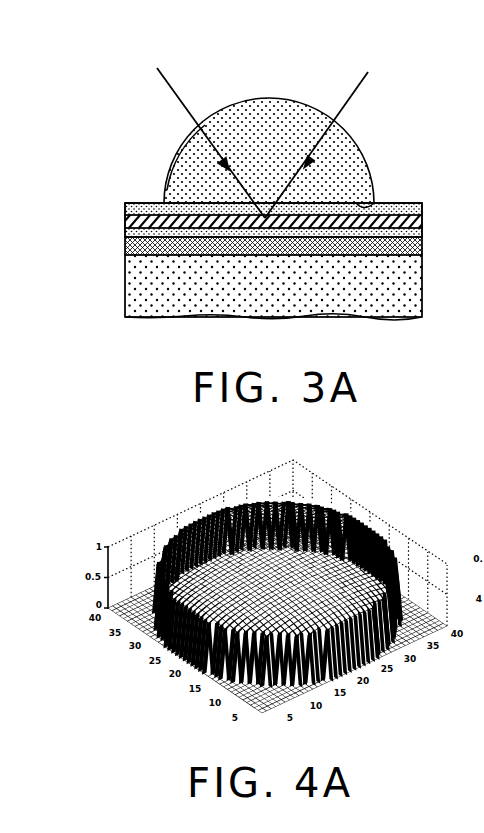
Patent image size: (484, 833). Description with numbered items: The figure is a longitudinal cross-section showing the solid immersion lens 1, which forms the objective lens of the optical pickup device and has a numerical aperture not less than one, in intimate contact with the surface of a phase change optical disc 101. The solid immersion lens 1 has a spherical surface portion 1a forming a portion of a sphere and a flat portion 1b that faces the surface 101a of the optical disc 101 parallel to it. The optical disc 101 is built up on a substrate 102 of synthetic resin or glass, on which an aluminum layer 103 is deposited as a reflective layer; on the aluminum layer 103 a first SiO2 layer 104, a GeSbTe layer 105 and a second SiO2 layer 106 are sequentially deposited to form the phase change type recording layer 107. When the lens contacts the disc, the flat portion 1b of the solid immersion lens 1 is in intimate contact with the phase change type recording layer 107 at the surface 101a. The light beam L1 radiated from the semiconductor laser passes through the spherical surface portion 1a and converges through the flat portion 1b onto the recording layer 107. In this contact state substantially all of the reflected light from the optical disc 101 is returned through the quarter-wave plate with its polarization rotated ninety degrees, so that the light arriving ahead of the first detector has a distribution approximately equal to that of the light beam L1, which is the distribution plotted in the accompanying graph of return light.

The solid immersion lens 1 is at (292, 102).
The spherical surface portion 1a is at (182, 148).
The flat portion 1b is at (378, 203).
The optical disc 101 is at (418, 298).
The surface of optical disc 101a is at (413, 203).
The substrate 102 is at (125, 297).
The aluminum layer 103 is at (124, 250).
The first SiO2 layer 104 is at (124, 234).
The GeSbTe layer 105 is at (124, 224).
The second SiO2 layer 106 is at (124, 207).
The phase change type recording layer 107 is at (64, 176).
The light beam L1 is at (171, 86).